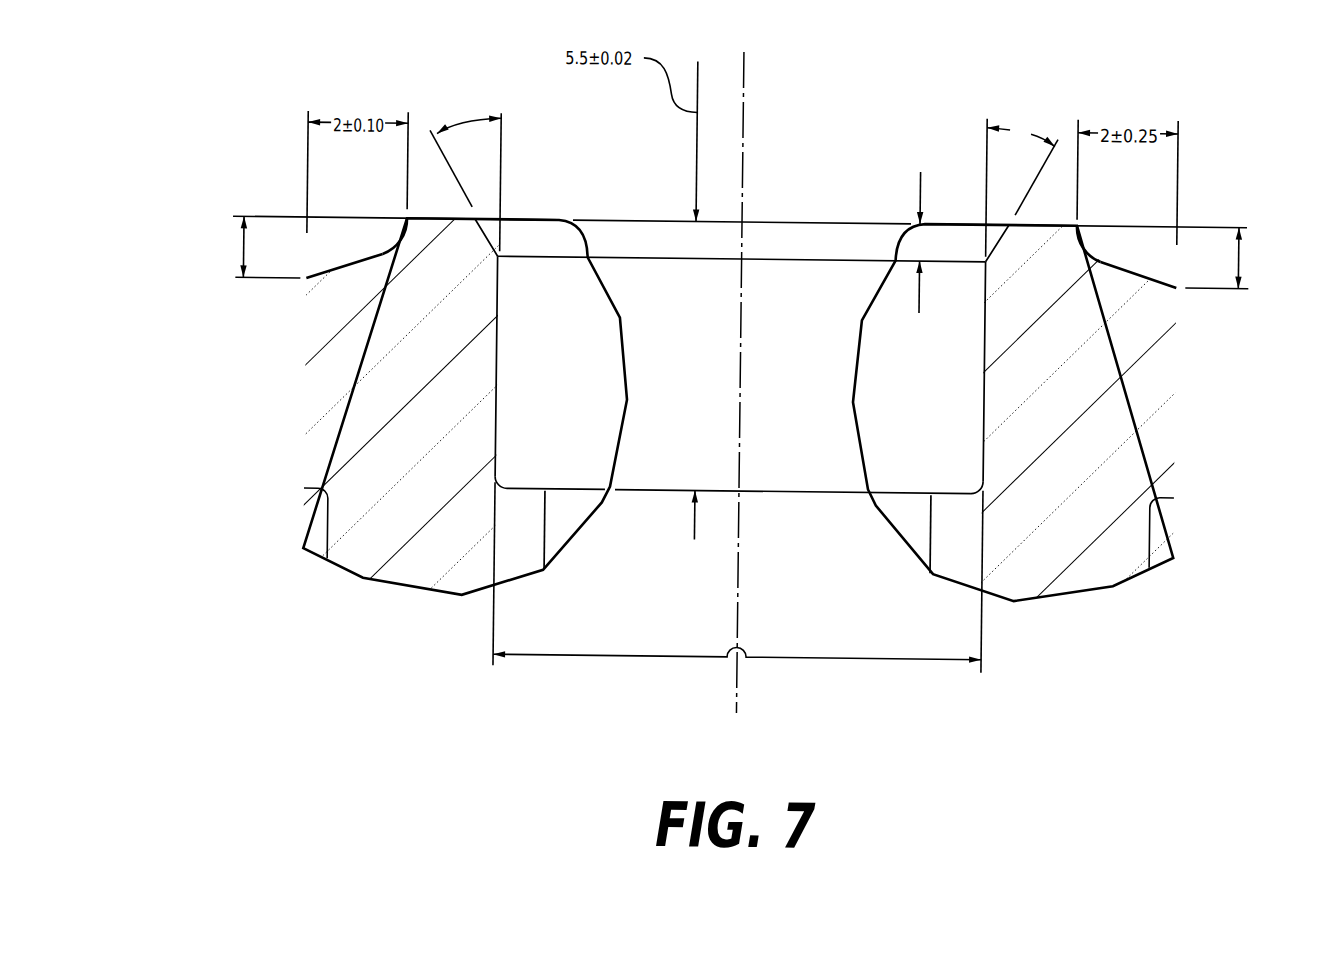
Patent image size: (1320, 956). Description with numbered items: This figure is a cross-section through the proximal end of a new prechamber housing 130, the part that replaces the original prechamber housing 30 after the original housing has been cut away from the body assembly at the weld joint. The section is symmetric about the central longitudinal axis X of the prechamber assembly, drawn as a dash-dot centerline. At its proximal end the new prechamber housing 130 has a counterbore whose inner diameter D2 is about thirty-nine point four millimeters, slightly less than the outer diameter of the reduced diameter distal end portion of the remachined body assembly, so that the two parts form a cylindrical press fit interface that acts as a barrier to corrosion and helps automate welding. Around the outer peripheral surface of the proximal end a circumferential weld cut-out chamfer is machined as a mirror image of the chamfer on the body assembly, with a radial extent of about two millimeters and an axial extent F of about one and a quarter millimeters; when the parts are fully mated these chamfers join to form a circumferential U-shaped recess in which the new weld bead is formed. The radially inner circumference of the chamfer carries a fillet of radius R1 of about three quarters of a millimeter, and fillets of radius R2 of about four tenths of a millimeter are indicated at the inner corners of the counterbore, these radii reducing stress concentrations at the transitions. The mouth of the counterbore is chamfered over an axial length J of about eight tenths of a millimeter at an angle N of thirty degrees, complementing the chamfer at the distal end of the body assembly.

The prechamber housing 30 is at (318, 456).
The new prechamber housing 130 is at (1162, 477).
The fillet radius R1 is at (395, 234).
The fillet radius R2 is at (580, 432).
The chamfer angle N is at (457, 124).
The shoulder step height F is at (241, 253).
The chamfer axial length J is at (919, 231).
The counterbore inner diameter D2 is at (793, 658).
The central longitudinal axis X is at (743, 369).